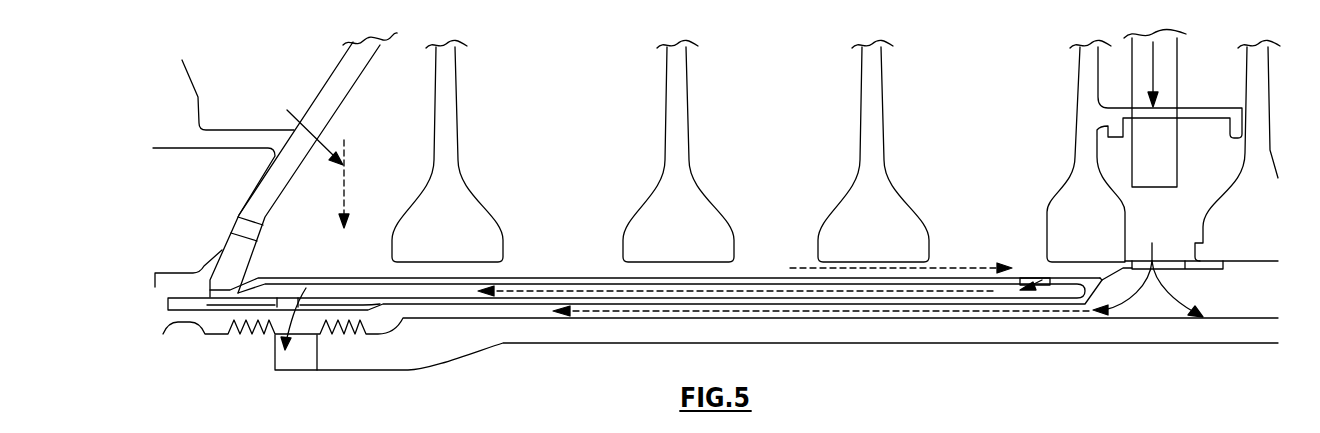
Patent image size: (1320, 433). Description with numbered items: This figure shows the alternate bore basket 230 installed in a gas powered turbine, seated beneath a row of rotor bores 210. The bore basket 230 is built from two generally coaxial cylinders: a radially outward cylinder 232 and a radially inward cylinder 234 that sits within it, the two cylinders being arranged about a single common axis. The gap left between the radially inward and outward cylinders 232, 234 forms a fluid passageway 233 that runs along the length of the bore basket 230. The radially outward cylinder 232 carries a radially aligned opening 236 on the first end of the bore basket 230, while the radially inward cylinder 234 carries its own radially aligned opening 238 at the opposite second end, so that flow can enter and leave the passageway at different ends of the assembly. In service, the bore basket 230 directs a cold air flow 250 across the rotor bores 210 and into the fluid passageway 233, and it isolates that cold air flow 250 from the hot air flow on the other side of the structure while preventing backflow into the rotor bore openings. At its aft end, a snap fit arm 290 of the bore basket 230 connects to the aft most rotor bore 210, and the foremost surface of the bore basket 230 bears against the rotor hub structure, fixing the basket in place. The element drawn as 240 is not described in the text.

The rotor bore 210 is at (443, 163).
The bore basket 230 is at (563, 278).
The radially outward cylinder 232 is at (507, 282).
The fluid passageway 233 is at (752, 290).
The radially inward cylinder 234 is at (623, 300).
The radially aligned opening 236 is at (1043, 280).
The radially aligned opening 238 is at (286, 332).
The rotor housing 240 is at (538, 330).
The cold air flow 250 is at (346, 176).
The snap fit arm 290 is at (1115, 272).